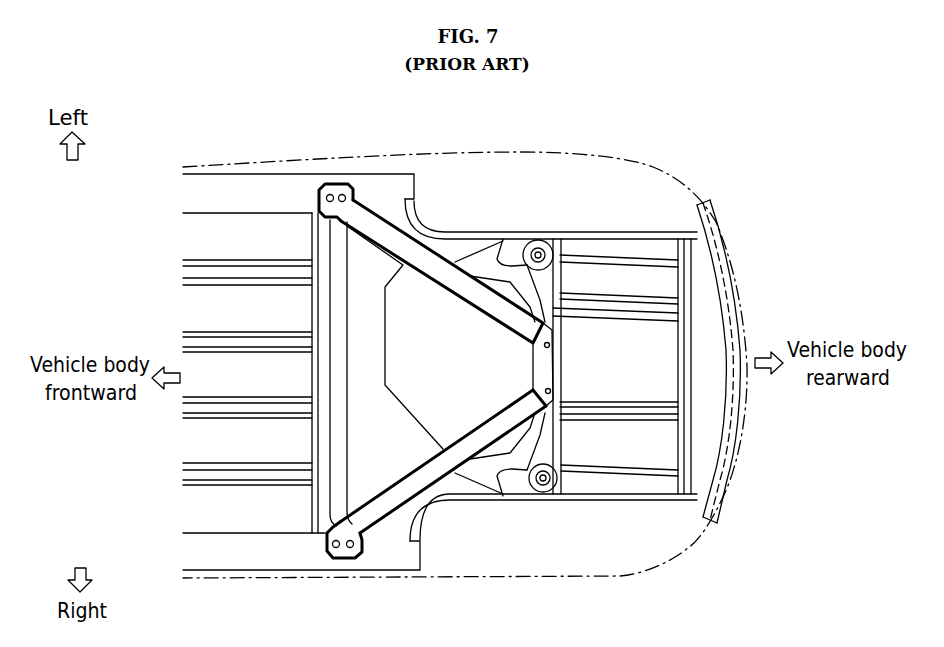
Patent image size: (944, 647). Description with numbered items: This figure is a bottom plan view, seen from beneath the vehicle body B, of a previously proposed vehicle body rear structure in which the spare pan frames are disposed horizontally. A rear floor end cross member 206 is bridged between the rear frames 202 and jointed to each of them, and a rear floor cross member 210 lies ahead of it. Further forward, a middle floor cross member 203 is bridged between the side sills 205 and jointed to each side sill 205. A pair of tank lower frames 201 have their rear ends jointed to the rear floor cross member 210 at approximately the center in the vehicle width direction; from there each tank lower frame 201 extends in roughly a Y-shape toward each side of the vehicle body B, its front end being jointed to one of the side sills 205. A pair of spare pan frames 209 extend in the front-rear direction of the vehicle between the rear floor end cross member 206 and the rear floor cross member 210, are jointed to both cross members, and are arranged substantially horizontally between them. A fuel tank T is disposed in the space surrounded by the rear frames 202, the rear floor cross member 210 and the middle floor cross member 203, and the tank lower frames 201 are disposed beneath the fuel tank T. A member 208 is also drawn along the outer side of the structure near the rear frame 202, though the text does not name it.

The tank lower frame 201 is at (367, 192).
The rear frame 202 is at (440, 247).
The middle floor cross member 203 is at (320, 313).
The side sill 205 is at (243, 176).
The rear floor end cross member 206 is at (697, 372).
The rear side rail 208 is at (733, 290).
The spare pan frame 209 is at (630, 302).
The rear floor cross member 210 is at (563, 312).
The vehicle body B is at (640, 166).
The fuel tank T is at (462, 398).